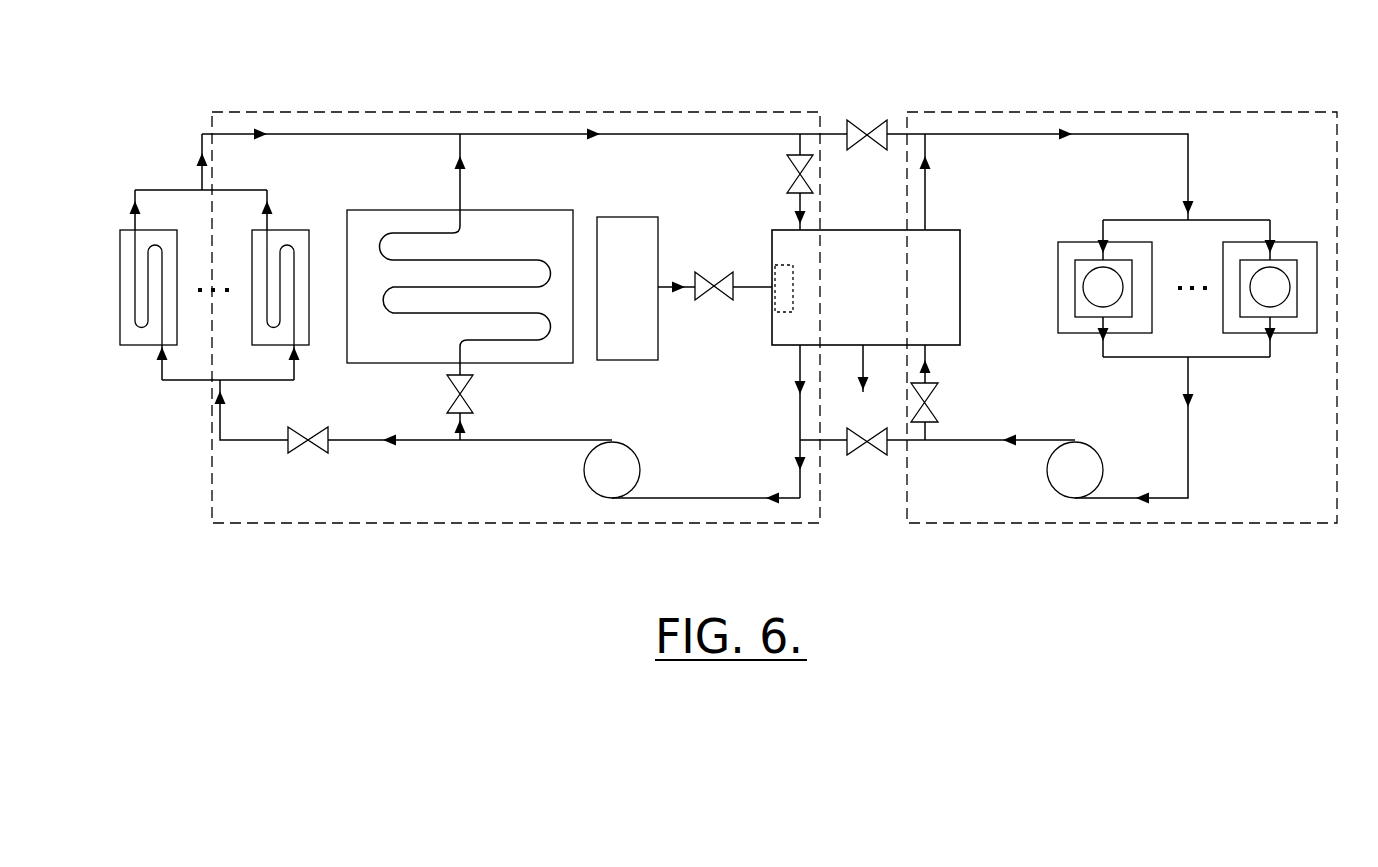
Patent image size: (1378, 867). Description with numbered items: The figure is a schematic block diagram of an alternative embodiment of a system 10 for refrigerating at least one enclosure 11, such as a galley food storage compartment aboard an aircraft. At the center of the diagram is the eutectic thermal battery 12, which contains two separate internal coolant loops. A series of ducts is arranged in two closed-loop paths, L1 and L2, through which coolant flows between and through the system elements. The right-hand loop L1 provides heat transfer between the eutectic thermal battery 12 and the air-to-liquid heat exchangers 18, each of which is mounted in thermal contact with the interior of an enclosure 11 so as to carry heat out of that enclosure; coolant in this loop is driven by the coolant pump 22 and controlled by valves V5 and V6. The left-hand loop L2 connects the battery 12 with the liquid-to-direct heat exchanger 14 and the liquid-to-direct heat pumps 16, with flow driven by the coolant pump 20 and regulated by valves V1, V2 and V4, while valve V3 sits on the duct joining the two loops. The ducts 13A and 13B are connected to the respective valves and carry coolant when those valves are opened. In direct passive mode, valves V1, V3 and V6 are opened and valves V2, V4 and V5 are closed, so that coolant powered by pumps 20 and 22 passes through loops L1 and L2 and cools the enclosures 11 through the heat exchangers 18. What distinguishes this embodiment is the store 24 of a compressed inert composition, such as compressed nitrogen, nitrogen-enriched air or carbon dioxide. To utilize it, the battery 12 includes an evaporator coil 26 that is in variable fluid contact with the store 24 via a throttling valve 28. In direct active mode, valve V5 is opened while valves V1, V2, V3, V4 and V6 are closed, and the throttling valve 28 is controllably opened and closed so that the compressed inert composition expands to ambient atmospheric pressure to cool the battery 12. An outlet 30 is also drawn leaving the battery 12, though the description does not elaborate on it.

The system 10 is at (727, 74).
The closed-loop path L1 is at (1113, 112).
The closed-loop path L2 is at (322, 108).
The enclosure 11 is at (1058, 301).
The eutectic thermal battery 12 is at (945, 230).
The duct 13A is at (498, 134).
The duct 13B is at (993, 134).
The liquid-to-direct heat exchanger 14 is at (386, 210).
The liquid-to-direct heat pump 16 is at (120, 250).
The air-to-liquid heat exchanger 18 is at (1075, 278).
The coolant pump 20 is at (584, 468).
The coolant pump 22 is at (1103, 467).
The store of compressed inert composition 24 is at (628, 217).
The evaporator coil 26 is at (771, 268).
The throttling valve 28 is at (734, 301).
The drain outlet 30 is at (863, 389).
The valve V1 is at (470, 404).
The valve V2 is at (298, 449).
The valve V3 is at (883, 119).
The valve V4 is at (790, 167).
The valve V5 is at (933, 415).
The valve V6 is at (888, 449).